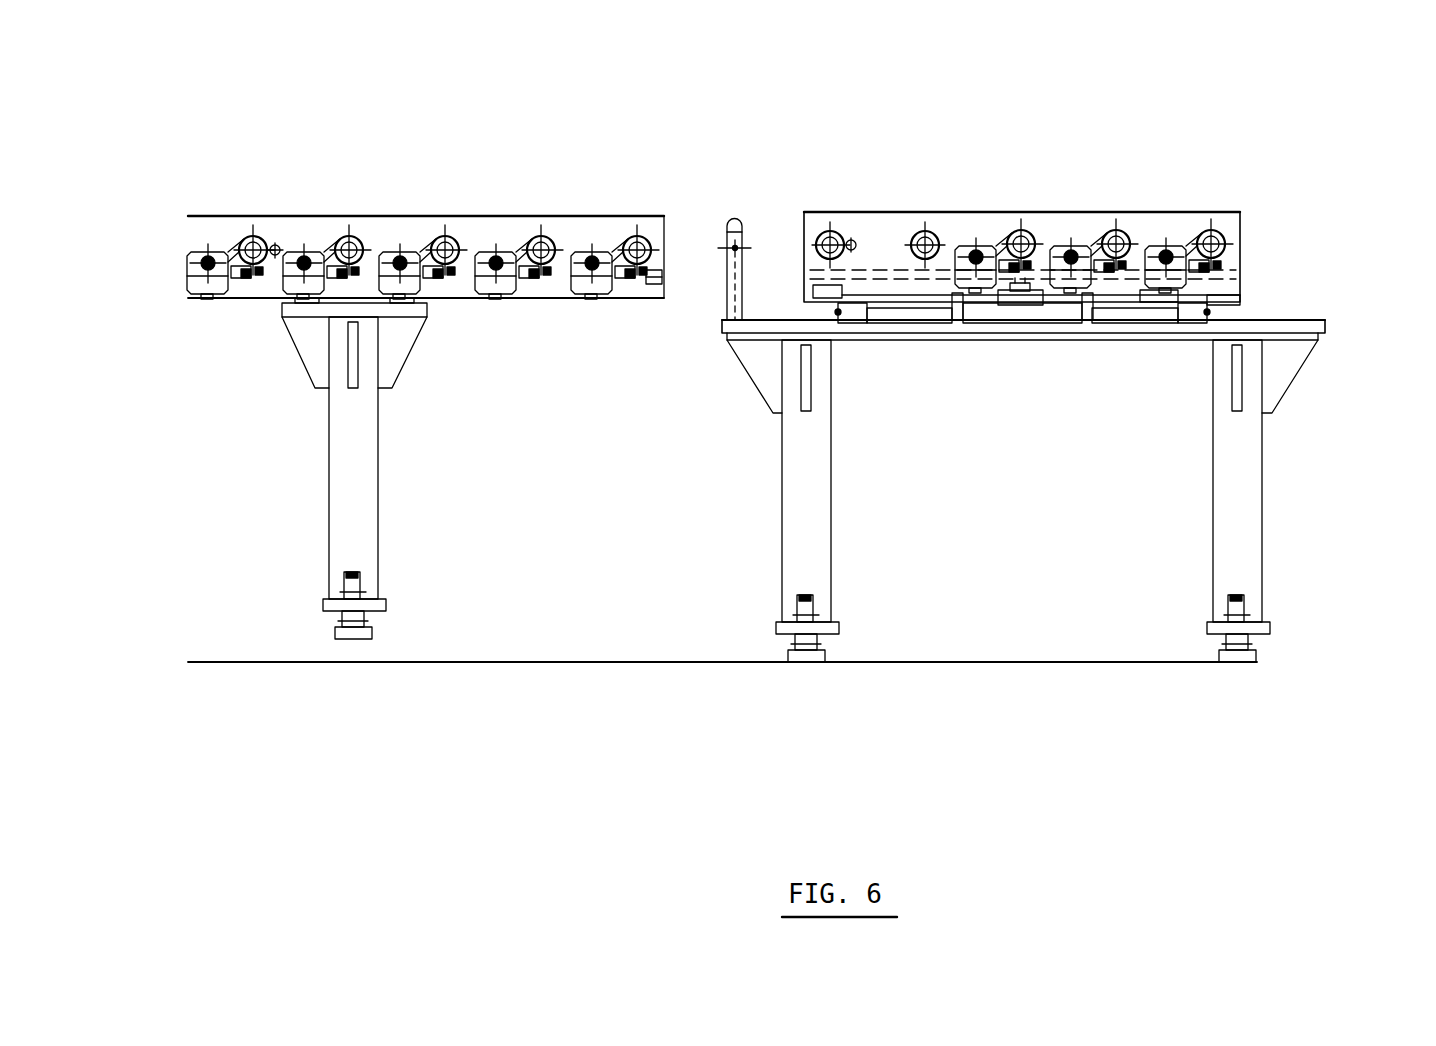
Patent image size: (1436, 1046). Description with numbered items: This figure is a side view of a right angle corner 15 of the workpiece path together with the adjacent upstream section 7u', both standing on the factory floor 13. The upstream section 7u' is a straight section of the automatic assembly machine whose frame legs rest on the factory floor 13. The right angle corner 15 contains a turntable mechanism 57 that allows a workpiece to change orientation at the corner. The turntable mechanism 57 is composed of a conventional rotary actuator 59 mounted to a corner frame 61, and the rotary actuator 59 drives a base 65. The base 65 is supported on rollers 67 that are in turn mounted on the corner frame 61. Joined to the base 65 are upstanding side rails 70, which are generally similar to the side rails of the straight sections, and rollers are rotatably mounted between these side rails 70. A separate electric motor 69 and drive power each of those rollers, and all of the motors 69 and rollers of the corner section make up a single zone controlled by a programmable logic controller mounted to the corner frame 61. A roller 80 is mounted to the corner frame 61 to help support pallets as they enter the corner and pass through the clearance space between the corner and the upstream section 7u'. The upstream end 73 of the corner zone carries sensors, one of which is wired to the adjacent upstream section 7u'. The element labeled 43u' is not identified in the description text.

The side rails 70 is at (885, 243).
The upstream end 73 is at (803, 293).
The roller 80 is at (730, 226).
The right angle corner 15 is at (1308, 229).
The base 65 is at (1233, 302).
The rollers 67 is at (839, 315).
The turntable mechanism 57 is at (896, 313).
The rotary actuator 59 is at (1020, 313).
The electric motor 69 is at (1150, 297).
The corner frame 61 is at (781, 494).
The factory floor 13 is at (463, 662).
The upstream section 7u' is at (501, 333).
The mounting bracket 43u' is at (654, 355).